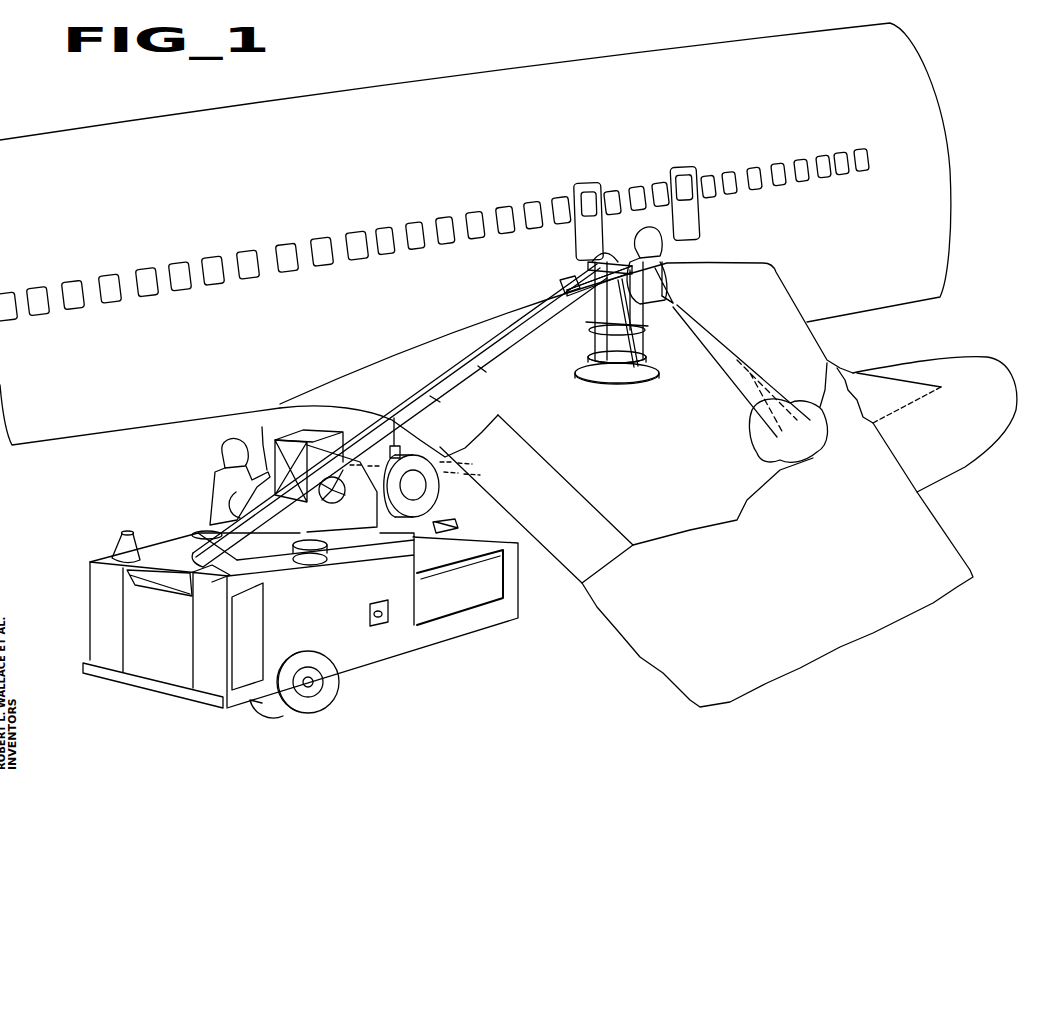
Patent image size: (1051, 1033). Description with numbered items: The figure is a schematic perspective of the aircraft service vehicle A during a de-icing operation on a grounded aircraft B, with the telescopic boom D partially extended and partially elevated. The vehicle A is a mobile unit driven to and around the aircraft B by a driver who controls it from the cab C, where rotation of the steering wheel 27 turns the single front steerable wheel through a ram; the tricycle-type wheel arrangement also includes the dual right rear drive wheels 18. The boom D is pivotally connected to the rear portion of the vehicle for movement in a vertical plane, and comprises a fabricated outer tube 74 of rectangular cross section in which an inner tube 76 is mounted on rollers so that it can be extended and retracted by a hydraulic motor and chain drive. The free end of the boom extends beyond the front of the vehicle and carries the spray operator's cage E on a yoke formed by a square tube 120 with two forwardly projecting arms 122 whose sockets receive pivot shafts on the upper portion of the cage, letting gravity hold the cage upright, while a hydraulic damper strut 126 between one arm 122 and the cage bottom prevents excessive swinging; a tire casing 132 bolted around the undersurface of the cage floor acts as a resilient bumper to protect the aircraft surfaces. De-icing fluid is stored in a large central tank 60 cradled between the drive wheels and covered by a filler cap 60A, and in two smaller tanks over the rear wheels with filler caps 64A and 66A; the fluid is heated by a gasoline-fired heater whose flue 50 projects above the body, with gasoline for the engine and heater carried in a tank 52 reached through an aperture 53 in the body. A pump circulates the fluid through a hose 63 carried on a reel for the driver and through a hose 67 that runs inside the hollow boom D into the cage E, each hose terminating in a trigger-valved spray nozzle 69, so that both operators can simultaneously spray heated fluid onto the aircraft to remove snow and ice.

The vehicle A is at (428, 679).
The aircraft B is at (460, 70).
The cab C is at (329, 416).
The telescopic boom D is at (458, 360).
The spray operator's cage E is at (605, 382).
The dual right rear drive wheels 18 is at (305, 714).
The steering wheel 27 is at (350, 501).
The flue 50 is at (118, 548).
The tank 52 is at (390, 605).
The aperture 53 is at (369, 608).
The central tank 60 is at (273, 551).
The filler cap 60A is at (322, 547).
The hose 63 is at (215, 490).
The filler cap 64A is at (205, 534).
The filler cap 66A is at (308, 565).
The hose 67 is at (590, 262).
The spray nozzle 69 is at (262, 450).
The outer tube 74 is at (395, 412).
The inner tube 76 is at (496, 361).
The square tube 120 is at (566, 292).
The arms 122 is at (580, 285).
The hydraulic damper strut 126 is at (640, 328).
The tire casing 132 is at (625, 384).